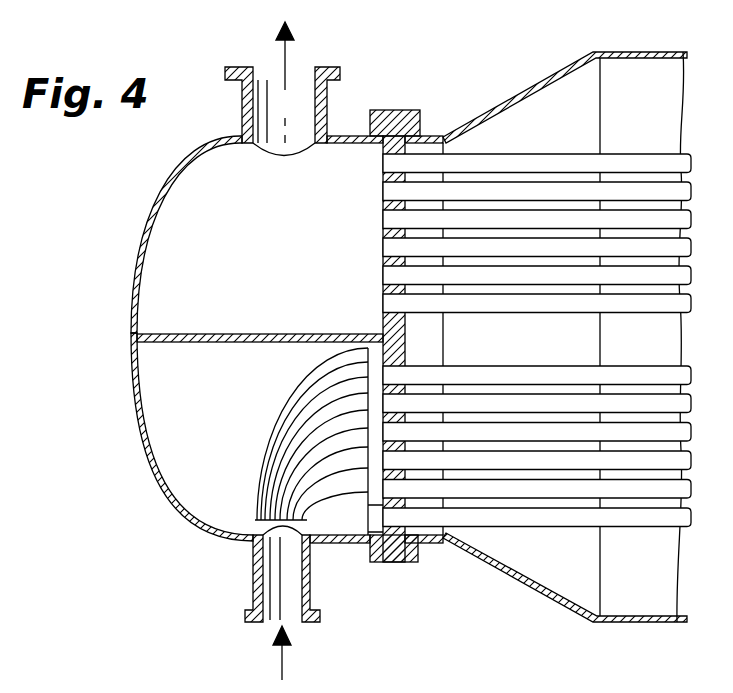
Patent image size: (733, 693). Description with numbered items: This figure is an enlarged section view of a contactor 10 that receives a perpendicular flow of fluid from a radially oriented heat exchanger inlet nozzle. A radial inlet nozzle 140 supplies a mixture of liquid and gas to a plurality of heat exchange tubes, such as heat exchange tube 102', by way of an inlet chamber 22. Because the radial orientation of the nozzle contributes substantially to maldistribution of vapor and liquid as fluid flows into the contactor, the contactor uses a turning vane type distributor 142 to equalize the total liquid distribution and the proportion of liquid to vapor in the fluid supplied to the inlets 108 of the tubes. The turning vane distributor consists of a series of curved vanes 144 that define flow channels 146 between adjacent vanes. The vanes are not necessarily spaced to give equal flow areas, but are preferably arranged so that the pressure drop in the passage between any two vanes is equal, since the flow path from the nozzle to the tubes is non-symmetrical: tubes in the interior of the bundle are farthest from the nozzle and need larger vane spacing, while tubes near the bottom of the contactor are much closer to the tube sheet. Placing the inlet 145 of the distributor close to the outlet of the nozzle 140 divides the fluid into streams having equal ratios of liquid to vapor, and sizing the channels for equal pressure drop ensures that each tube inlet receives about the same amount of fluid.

The contactor 10 is at (620, 624).
The inlet chamber 22 is at (172, 370).
The heat exchange tube 102' is at (537, 521).
The tube inlets 108 is at (397, 437).
The radial inlet nozzle 140 is at (253, 577).
The turning vane type distributor 142 is at (274, 445).
The curved vanes 144 is at (324, 386).
The distributor inlet 145 is at (260, 520).
The flow channels 146 is at (298, 420).